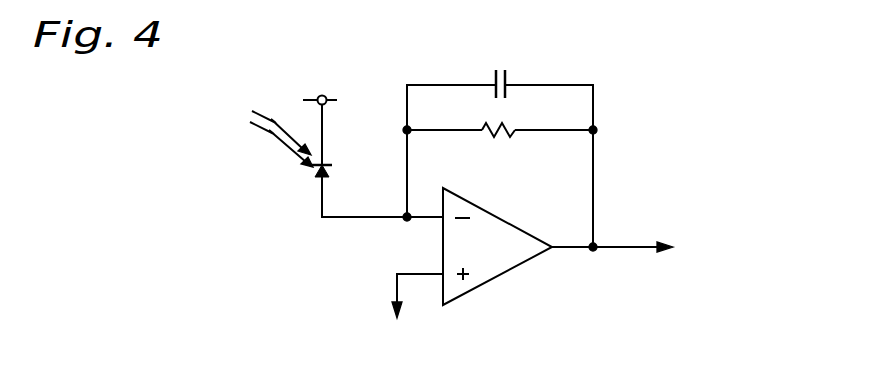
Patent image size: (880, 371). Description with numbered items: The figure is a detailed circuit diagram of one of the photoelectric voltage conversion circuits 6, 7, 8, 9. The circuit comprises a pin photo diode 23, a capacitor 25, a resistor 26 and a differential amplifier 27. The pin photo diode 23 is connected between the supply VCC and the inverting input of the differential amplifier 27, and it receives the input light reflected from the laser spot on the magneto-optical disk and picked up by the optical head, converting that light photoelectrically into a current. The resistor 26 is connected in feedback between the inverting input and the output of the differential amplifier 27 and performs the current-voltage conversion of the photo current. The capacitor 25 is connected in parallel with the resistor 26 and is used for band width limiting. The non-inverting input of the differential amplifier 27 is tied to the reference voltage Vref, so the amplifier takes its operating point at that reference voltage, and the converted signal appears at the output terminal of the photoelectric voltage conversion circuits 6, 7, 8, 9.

The photoelectric voltage conversion circuit 6 is at (477, 180).
The photoelectric voltage conversion circuit 7 is at (477, 180).
The photoelectric voltage conversion circuit 8 is at (477, 180).
The photoelectric voltage conversion circuit 9 is at (613, 68).
The pin photo diode 23 is at (312, 176).
The capacitor 25 is at (453, 85).
The resistor 26 is at (500, 136).
The differential amplifier 27 is at (518, 272).